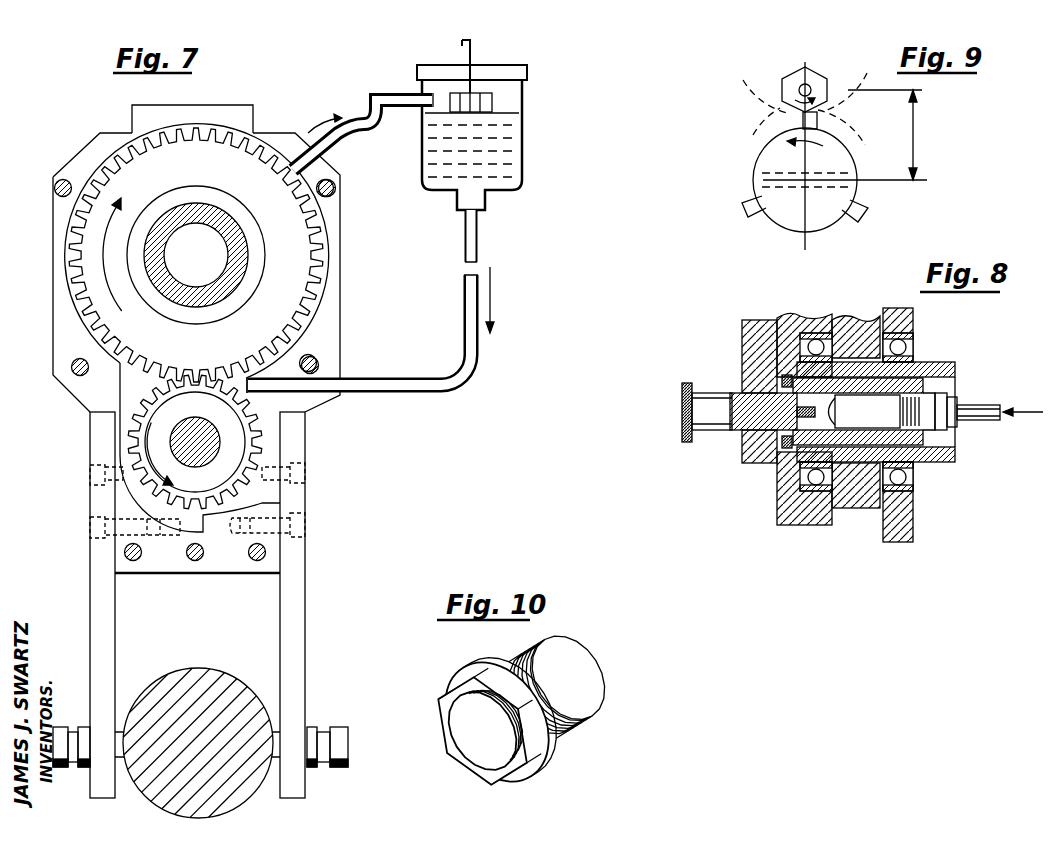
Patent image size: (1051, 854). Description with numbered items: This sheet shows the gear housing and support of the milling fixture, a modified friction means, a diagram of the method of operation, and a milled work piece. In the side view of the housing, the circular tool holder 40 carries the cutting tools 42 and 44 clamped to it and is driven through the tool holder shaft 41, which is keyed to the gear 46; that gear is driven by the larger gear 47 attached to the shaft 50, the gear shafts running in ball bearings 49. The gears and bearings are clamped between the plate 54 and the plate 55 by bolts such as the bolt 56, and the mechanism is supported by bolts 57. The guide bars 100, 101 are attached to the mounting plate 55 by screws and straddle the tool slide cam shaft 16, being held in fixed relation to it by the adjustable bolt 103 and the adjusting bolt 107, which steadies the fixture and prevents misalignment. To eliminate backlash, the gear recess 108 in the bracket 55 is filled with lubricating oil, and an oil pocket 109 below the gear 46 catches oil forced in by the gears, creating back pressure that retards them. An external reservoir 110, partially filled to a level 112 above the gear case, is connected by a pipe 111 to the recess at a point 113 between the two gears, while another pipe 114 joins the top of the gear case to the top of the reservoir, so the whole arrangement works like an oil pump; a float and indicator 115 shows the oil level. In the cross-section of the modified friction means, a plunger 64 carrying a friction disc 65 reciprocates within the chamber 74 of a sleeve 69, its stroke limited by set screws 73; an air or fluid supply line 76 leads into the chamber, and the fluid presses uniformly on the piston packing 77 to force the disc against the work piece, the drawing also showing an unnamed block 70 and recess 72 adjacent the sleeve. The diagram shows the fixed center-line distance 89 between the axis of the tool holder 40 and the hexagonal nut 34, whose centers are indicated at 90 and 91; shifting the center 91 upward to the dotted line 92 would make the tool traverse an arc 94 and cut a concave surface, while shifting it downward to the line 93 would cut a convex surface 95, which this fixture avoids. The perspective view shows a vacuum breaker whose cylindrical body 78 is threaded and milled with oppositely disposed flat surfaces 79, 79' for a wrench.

In FIG. 7, the tool slide cam shaft 16 is at (210, 682).
In FIG. 9, the hexagonal nut 34 is at (813, 72).
In FIG. 9, the circular tool holder 40 is at (770, 157).
In FIG. 7, the tool holder shaft 41 is at (205, 440).
In FIG. 9, the cutting tool 42 is at (820, 118).
In FIG. 9, the cutting tool 44 is at (742, 203).
In FIG. 7, the gear 46 is at (247, 432).
In FIG. 7, the larger gear 47 is at (293, 225).
In FIG. 8, the larger gear 47 is at (867, 500).
In FIG. 8, the ball bearings 49 is at (902, 479).
In FIG. 7, the shaft 50 is at (250, 275).
In FIG. 8, the plate 54 is at (905, 522).
In FIG. 7, the plate 55 is at (224, 128).
In FIG. 8, the plate 55 is at (787, 513).
In FIG. 7, the bolt 56 is at (318, 360).
In FIG. 7, the bolt 57 is at (334, 191).
In FIG. 8, the plunger 64 is at (716, 412).
In FIG. 8, the friction disc 65 is at (682, 387).
In FIG. 7, the sleeve 69 is at (195, 210).
In FIG. 8, the sleeve 69 is at (912, 366).
In FIG. 8, the block 70 is at (758, 447).
In FIG. 8, the recess 72 is at (948, 388).
In FIG. 8, the set screws 73 is at (786, 381).
In FIG. 8, the chamber 74 is at (933, 448).
In FIG. 8, the air or fluid supply line 76 is at (981, 406).
In FIG. 8, the piston packing 77 is at (835, 402).
In FIG. 10, the cylindrical body 78 is at (552, 717).
In FIG. 10, the flat surface 79 is at (510, 728).
In FIG. 10, the flat surface 79' is at (472, 739).
In FIG. 9, the fixed center-line distance 89 is at (914, 130).
In FIG. 9, the center 90 is at (803, 86).
In FIG. 9, the center 91 is at (805, 181).
In FIG. 9, the dotted line 92 is at (819, 158).
In FIG. 9, the line 93 is at (828, 186).
In FIG. 9, the arc 94 is at (768, 127).
In FIG. 9, the convex surface 95 is at (747, 87).
In FIG. 7, the guide bar 100 is at (293, 587).
In FIG. 7, the guide bar 101 is at (82, 604).
In FIG. 7, the adjustable bolt 103 is at (60, 728).
In FIG. 7, the adjusting bolt 107 is at (332, 727).
In FIG. 7, the gear recess 108 is at (258, 132).
In FIG. 7, the oil pocket 109 is at (188, 522).
In FIG. 7, the reservoir container 110 is at (521, 143).
In FIG. 7, the pipe 111 is at (410, 391).
In FIG. 7, the lubricant level 112 is at (512, 107).
In FIG. 7, the connection point 113 is at (236, 380).
In FIG. 7, the pipe 114 is at (340, 147).
In FIG. 7, the float and indicator 115 is at (472, 55).